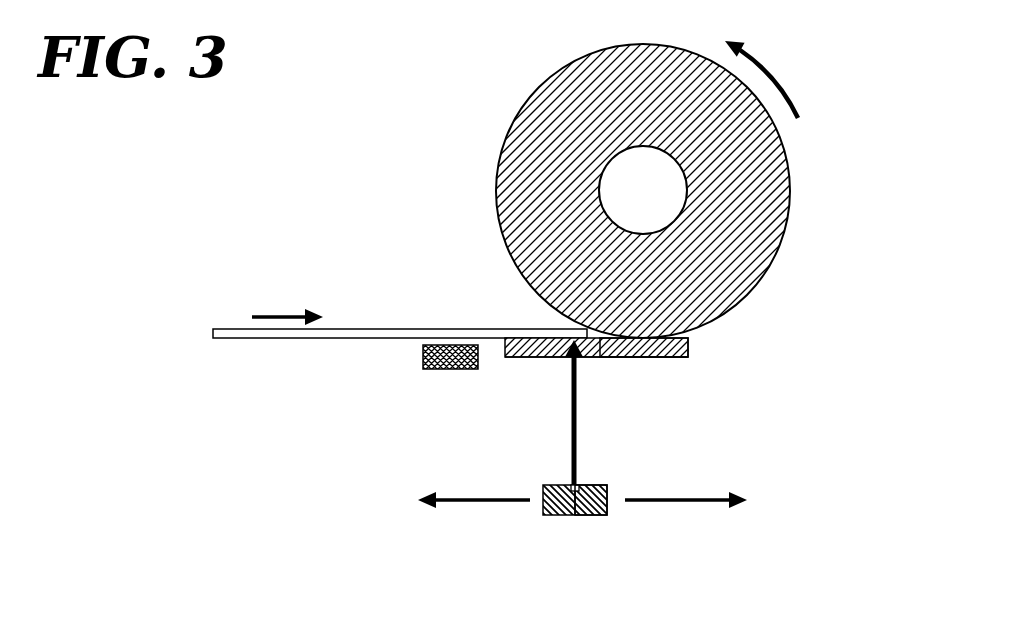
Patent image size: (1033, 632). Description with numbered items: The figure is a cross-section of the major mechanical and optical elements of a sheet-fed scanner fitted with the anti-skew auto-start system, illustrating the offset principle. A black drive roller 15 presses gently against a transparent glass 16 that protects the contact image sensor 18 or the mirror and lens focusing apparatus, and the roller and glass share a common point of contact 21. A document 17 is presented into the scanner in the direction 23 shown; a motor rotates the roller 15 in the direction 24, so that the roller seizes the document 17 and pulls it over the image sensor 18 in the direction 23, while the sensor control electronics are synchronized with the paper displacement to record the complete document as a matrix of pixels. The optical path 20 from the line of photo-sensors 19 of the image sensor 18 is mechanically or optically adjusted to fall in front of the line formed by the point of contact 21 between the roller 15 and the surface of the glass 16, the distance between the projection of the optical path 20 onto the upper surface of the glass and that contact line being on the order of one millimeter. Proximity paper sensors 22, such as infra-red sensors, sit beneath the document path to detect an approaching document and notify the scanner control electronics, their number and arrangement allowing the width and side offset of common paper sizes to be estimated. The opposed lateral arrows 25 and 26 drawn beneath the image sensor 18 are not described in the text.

The drive roller 15 is at (523, 128).
The transparent glass 16 is at (688, 357).
The document 17 is at (532, 338).
The contact image sensor 18 is at (552, 513).
The line of photo-sensors 19 is at (578, 513).
The optical path 20 is at (572, 415).
The point of contact 21 is at (628, 357).
The proximity paper sensors 22 is at (423, 360).
The document feed direction 23 is at (280, 292).
The roller rotation direction 24 is at (782, 75).
The lateral movement direction arrow 25 is at (465, 502).
The lateral movement direction arrow 26 is at (695, 502).